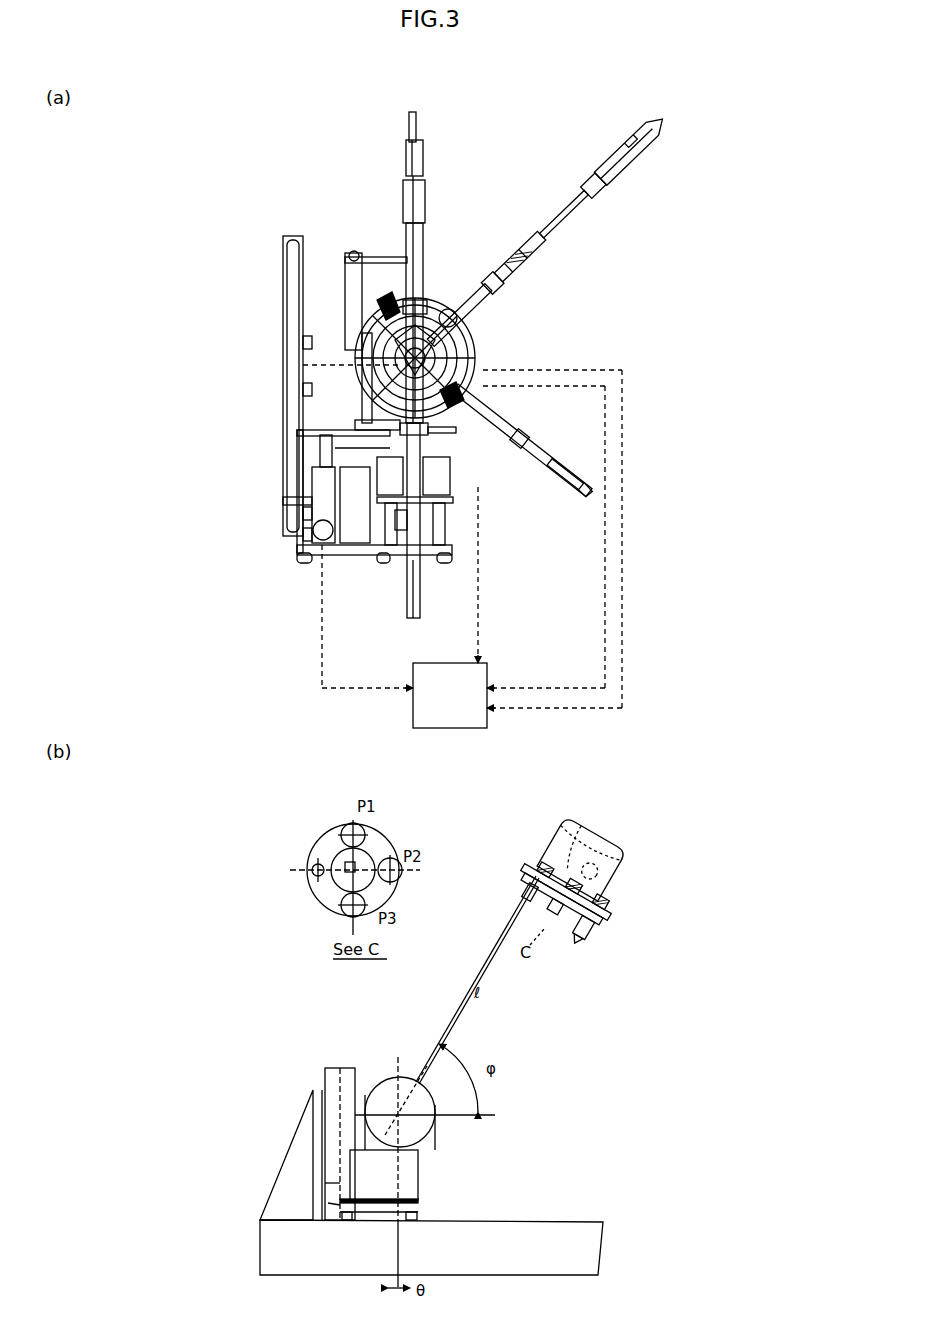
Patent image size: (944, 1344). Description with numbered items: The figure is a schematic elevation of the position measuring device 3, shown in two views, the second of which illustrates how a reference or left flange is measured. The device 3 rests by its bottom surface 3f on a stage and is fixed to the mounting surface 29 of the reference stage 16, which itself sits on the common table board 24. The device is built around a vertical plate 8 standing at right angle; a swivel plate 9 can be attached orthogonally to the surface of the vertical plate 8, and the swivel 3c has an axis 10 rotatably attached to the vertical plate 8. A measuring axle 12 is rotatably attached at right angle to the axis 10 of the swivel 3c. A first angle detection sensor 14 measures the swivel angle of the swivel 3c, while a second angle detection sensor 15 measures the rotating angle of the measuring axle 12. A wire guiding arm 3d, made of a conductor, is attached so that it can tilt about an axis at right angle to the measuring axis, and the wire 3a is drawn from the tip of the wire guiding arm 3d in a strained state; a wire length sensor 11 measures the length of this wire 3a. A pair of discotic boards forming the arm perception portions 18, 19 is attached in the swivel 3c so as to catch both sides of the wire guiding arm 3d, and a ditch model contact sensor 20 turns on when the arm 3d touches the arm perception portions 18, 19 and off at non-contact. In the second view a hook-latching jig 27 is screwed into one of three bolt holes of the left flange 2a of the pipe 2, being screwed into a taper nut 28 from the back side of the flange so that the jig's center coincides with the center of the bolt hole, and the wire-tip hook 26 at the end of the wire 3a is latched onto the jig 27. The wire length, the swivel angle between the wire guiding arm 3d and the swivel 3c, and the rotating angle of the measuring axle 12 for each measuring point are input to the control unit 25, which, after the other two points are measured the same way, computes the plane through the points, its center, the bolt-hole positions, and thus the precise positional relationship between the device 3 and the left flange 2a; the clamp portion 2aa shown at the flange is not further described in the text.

The pipe 2 is at (579, 832).
The left flange 2a is at (603, 918).
The clamp portion 2aa is at (578, 932).
The position measuring device 3 is at (489, 156).
The wire 3a is at (585, 194).
The swivel 3c is at (457, 432).
The wire guiding arm 3d is at (484, 284).
The bottom surface 3f is at (425, 1220).
The vertical plate 8 is at (291, 282).
The swivel plate 9 is at (349, 437).
The axis 10 is at (410, 591).
The wire length sensor 11 is at (360, 532).
The measuring axle 12 is at (473, 398).
The first angle detection sensor 14 is at (438, 470).
The second angle detection sensor 15 is at (430, 304).
The reference stage 16 is at (297, 1158).
The arm perception portion 18 is at (462, 358).
The arm perception portion 19 is at (488, 338).
The ditch model contact sensor 20 is at (457, 355).
The common table board 24 is at (566, 1262).
The control unit 25 is at (416, 716).
The wire-tip hook 26 is at (422, 148).
The hook-latching jig 27 is at (527, 879).
The taper nut 28 is at (553, 866).
The mounting surface 29 is at (328, 1205).